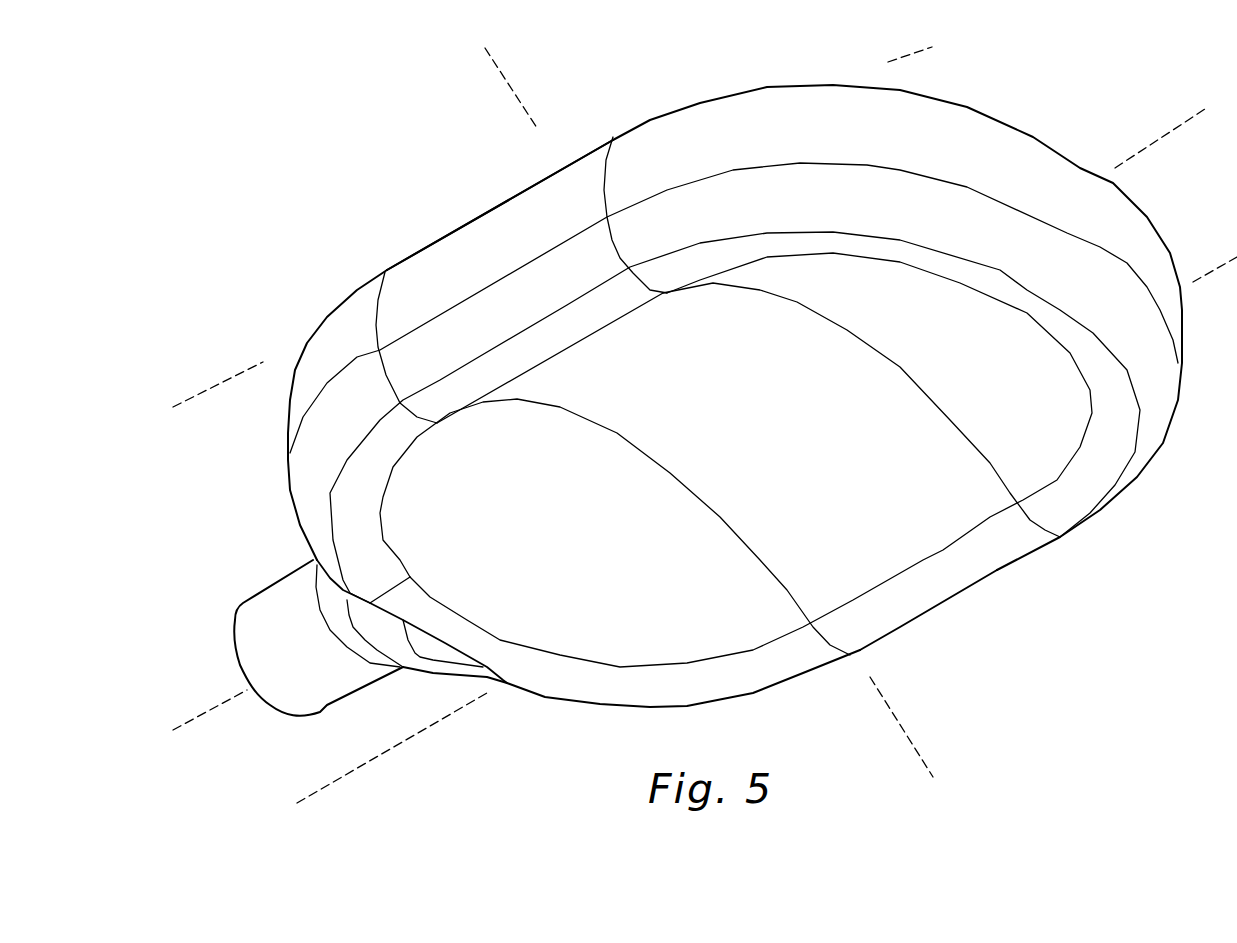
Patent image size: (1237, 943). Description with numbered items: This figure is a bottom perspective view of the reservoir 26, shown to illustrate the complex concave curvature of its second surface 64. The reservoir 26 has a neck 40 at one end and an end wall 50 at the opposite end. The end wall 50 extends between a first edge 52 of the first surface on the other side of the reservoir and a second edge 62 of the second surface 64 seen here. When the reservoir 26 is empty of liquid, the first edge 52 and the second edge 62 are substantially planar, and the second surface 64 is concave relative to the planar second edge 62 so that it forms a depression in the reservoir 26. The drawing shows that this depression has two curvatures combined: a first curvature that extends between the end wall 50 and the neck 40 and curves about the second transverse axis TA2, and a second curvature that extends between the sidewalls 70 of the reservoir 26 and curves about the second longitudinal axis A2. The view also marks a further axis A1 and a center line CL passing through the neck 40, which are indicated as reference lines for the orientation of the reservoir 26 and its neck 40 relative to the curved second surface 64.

The reservoir 26 is at (1043, 656).
The neck 40 is at (266, 647).
The end wall 50 is at (1020, 172).
The first edge 52 is at (554, 160).
The second edge 62 is at (904, 623).
The second surface 64 is at (975, 504).
The sidewalls 70 is at (518, 242).
The second transverse axis TA2 is at (485, 55).
The first axis A1 is at (258, 366).
The second longitudinal axis A2 is at (404, 746).
The center line CL is at (199, 720).